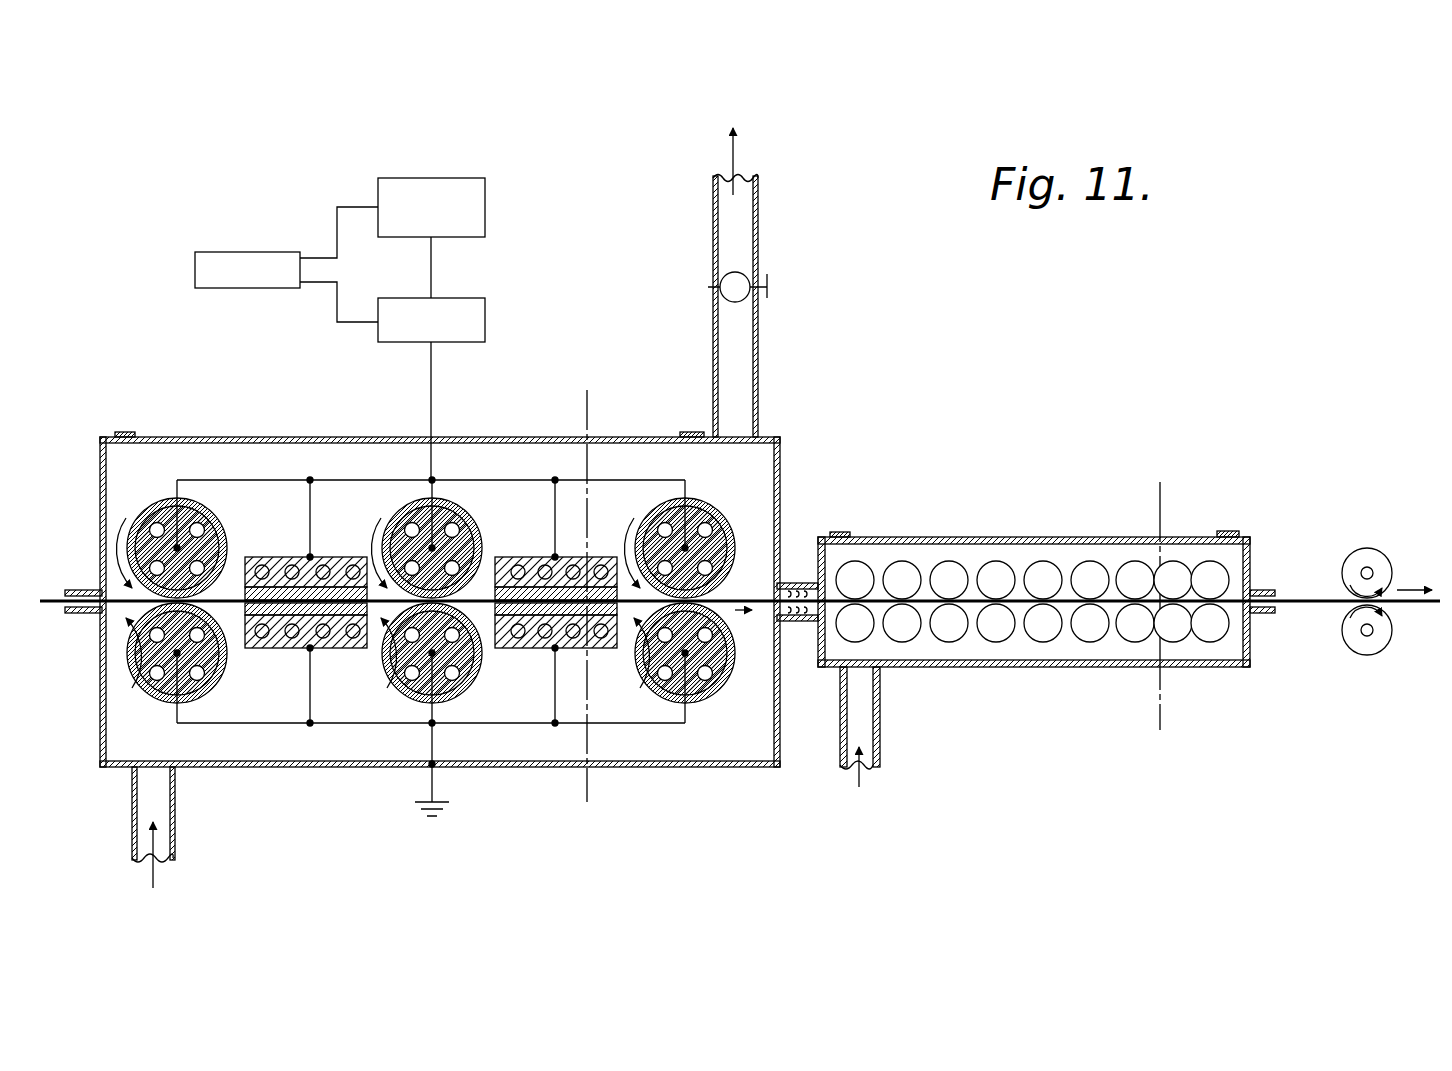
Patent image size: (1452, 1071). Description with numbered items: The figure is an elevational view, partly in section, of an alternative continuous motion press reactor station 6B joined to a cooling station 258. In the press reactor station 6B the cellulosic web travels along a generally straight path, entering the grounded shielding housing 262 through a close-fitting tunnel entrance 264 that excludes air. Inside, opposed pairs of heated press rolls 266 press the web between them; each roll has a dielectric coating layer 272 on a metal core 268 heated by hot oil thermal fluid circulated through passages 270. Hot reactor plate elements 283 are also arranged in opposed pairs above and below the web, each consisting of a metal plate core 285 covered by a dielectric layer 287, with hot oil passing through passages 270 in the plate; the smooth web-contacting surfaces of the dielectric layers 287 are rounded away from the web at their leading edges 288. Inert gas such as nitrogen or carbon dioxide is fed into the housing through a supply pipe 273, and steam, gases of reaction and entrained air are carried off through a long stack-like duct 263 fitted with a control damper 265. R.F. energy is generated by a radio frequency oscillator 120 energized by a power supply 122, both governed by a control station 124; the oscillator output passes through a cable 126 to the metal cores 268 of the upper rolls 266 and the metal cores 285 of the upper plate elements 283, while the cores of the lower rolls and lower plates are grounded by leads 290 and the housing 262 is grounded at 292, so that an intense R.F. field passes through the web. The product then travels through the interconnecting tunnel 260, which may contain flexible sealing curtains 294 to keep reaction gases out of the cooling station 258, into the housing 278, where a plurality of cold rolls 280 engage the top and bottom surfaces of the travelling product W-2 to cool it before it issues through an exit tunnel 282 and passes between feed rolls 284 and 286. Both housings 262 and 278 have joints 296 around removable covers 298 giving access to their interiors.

The continuous motion press reactor station 6B is at (285, 412).
The radio frequency oscillator 120 is at (487, 323).
The power supply 122 is at (462, 176).
The control station 124 is at (222, 252).
The cables 126 is at (438, 390).
The cooling station 258 is at (1066, 448).
The tunnel 260 is at (808, 626).
The shielding housing 262 is at (510, 767).
The duct 263 is at (760, 368).
The tunnel entrance 264 is at (82, 613).
The control damper 265 is at (737, 273).
The heated press rolls 266 is at (213, 500).
The metal cores 268 is at (215, 540).
The passages 270 is at (193, 524).
The dielectric coating layers 272 is at (182, 703).
The supply pipe 273 is at (178, 830).
The housing 278 is at (1005, 667).
The cold rolls 280 is at (1197, 565).
The exit tunnel 282 is at (1270, 615).
The feed roll 284 is at (1369, 560).
The feed roll 286 is at (1382, 653).
The metal plate cores 285 is at (280, 648).
The hot reactor plate elements 283 is at (338, 513).
The dielectric layers 287 is at (336, 590).
The rounded leading edges 288 is at (250, 592).
The leads 290 is at (386, 727).
The ground 292 is at (430, 780).
The flexible sealing curtains 294 is at (800, 580).
The joints 296 is at (125, 432).
The removable covers 298 is at (352, 437).
The travelling product W-2 is at (1295, 597).